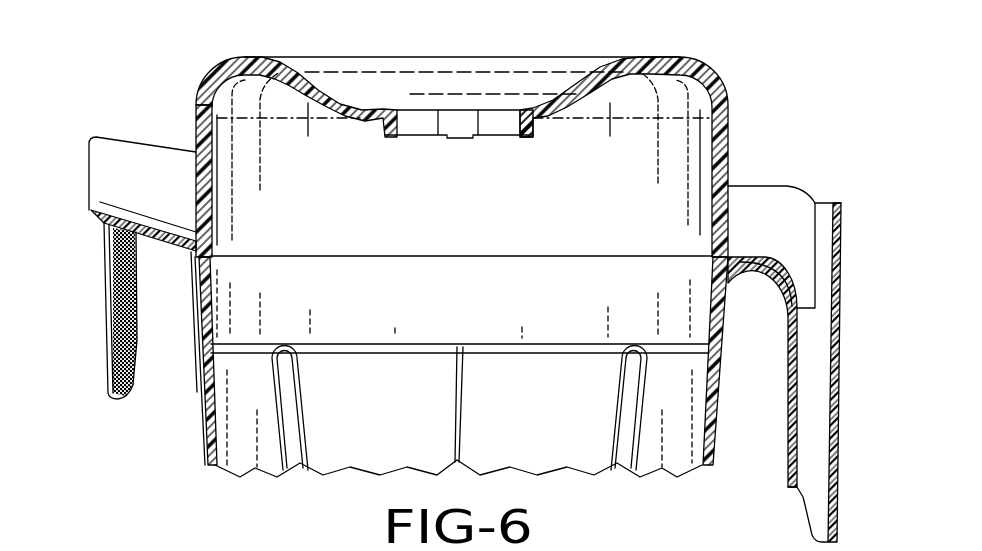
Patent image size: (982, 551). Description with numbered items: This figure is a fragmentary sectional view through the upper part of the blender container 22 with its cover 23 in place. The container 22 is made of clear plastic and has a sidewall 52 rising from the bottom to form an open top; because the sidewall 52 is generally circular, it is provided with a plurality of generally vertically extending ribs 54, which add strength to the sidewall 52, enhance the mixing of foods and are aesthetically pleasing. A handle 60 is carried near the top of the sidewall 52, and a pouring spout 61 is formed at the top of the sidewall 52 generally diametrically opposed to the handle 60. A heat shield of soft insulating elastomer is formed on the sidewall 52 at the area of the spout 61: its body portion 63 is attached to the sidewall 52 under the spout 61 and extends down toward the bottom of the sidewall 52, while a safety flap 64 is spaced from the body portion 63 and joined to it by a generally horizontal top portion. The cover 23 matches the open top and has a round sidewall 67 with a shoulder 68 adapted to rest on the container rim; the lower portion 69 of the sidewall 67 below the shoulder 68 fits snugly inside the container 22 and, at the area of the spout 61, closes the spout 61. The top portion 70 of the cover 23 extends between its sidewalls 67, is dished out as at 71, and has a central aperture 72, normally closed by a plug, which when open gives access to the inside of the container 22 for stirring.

The blender container 22 is at (200, 456).
The cover 23 is at (682, 45).
The sidewall 52 is at (205, 425).
The ribs 54 is at (300, 410).
The handle 60 is at (840, 228).
The pouring spout 61 is at (95, 163).
The body portion 63 is at (200, 392).
The safety flap 64 is at (108, 313).
The sidewall 67 is at (196, 137).
The shoulder 68 is at (200, 191).
The lower portion 69 is at (213, 228).
The top portion 70 is at (223, 82).
The dished out area 71 is at (542, 110).
The central aperture 72 is at (398, 127).